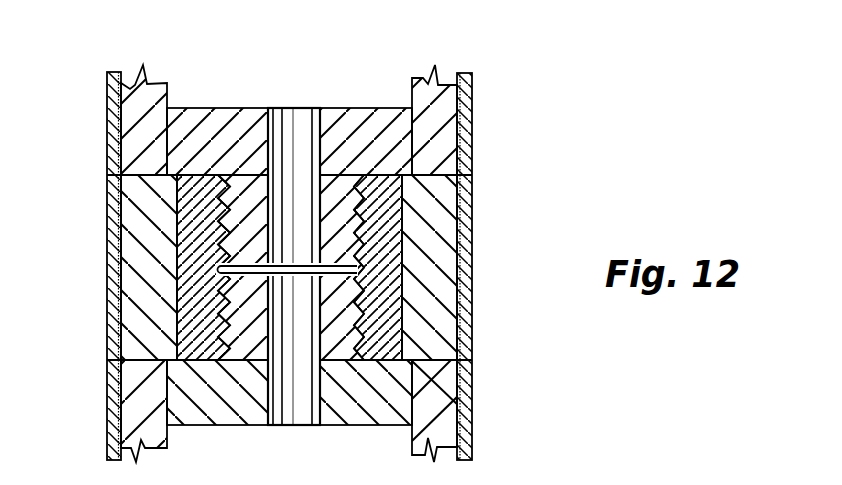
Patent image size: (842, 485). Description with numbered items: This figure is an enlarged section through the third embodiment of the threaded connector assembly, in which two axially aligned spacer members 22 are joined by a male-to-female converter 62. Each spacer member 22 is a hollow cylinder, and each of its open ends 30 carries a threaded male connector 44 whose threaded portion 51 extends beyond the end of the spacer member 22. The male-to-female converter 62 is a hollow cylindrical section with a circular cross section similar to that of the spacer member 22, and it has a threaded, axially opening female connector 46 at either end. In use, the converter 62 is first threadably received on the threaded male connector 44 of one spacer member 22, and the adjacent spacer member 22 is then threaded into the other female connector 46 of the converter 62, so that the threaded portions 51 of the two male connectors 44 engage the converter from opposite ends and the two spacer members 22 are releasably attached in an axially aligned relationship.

The open end 30 is at (103, 100).
The spacer member 22 is at (473, 138).
The threaded male connector 44 is at (350, 105).
The threaded female connector 46 is at (180, 214).
The male-to-female converter 62 is at (438, 242).
The threaded portion 51 is at (248, 253).